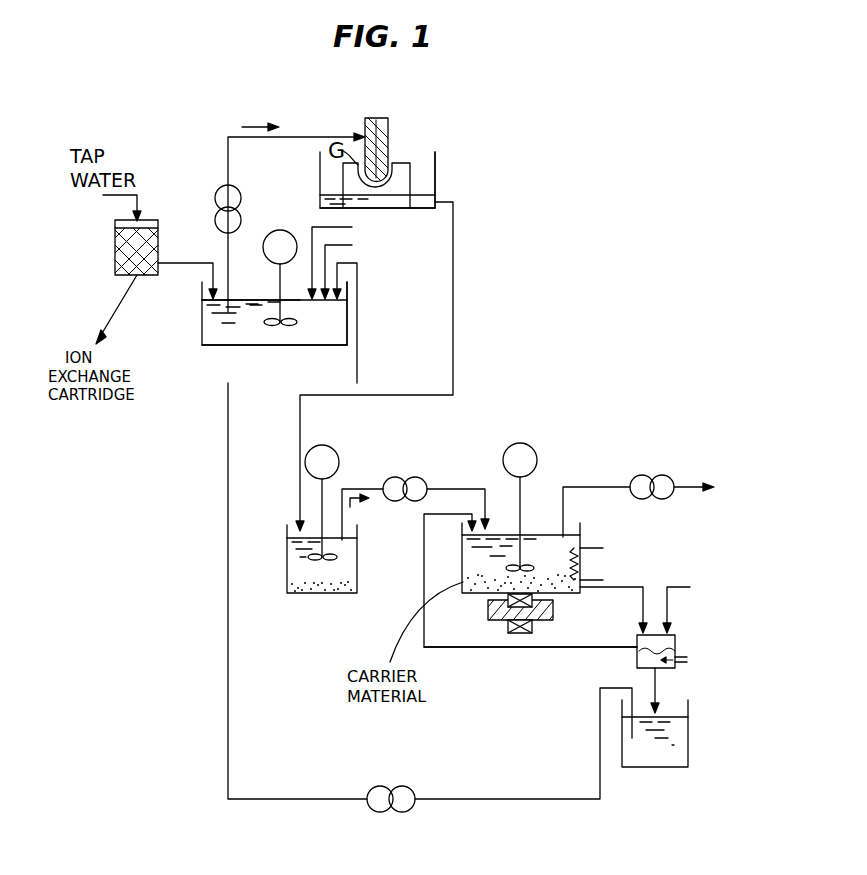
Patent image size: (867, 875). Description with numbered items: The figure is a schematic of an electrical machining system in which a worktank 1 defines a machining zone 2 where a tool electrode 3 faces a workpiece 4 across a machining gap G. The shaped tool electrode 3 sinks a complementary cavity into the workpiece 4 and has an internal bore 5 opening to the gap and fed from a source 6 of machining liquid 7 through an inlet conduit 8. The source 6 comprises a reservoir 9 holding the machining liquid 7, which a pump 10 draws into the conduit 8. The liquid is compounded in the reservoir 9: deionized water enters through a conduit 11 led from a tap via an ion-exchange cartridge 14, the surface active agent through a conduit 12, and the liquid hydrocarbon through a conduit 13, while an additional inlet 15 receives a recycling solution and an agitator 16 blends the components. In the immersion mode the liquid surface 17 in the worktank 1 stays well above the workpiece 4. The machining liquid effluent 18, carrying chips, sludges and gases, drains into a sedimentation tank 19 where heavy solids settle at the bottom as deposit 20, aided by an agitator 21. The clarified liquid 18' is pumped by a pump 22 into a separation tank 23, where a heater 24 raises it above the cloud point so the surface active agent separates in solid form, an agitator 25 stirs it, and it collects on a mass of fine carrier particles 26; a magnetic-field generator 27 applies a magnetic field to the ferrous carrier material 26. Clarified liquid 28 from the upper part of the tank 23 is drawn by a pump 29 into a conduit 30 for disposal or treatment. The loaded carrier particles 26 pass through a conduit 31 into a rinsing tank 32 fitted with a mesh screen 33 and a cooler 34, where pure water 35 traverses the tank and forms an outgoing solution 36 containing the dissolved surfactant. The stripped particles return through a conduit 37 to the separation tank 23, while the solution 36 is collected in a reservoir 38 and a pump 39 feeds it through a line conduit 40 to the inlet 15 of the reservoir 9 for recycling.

The worktank 1 is at (320, 183).
The machining zone 2 is at (390, 163).
The tool electrode 3 is at (392, 118).
The workpiece 4 is at (400, 206).
The internal bore 5 is at (388, 138).
The machining liquid source 6 is at (186, 321).
The machining liquid 7 is at (250, 333).
The inlet conduit 8 is at (310, 135).
The reservoir 9 is at (222, 346).
The pump 10 is at (218, 190).
The conduit 11 is at (183, 263).
The conduit 12 is at (352, 227).
The conduit 13 is at (352, 245).
The ion-exchange cartridge 14 is at (115, 272).
The additional inlet 15 is at (350, 290).
The agitator 16 is at (277, 279).
The liquid surface 17 is at (422, 190).
The machining liquid effluent 18 is at (393, 358).
The clarified liquid 18' is at (465, 538).
The sedimentation tank 19 is at (357, 568).
The settled solid components 20 is at (328, 594).
The agitator 21 is at (323, 490).
The pump 22 is at (427, 478).
The separation tank 23 is at (580, 535).
The heater 24 is at (582, 568).
The agitator 25 is at (518, 489).
The carrier material 26 is at (477, 591).
The magnetic-field generator 27 is at (553, 612).
The clarified liquid 28 is at (558, 540).
The pump 29 is at (667, 500).
The conduit 30 is at (594, 486).
The conduit 31 is at (610, 588).
The rinsing tank 32 is at (675, 640).
The mesh screen 33 is at (637, 660).
The cooler 34 is at (687, 663).
The pure water 35 is at (680, 587).
The outgoing solution 36 is at (657, 687).
The conduit 37 is at (530, 648).
The reservoir 38 is at (688, 737).
The pump 39 is at (380, 787).
The line conduit 40 is at (503, 797).